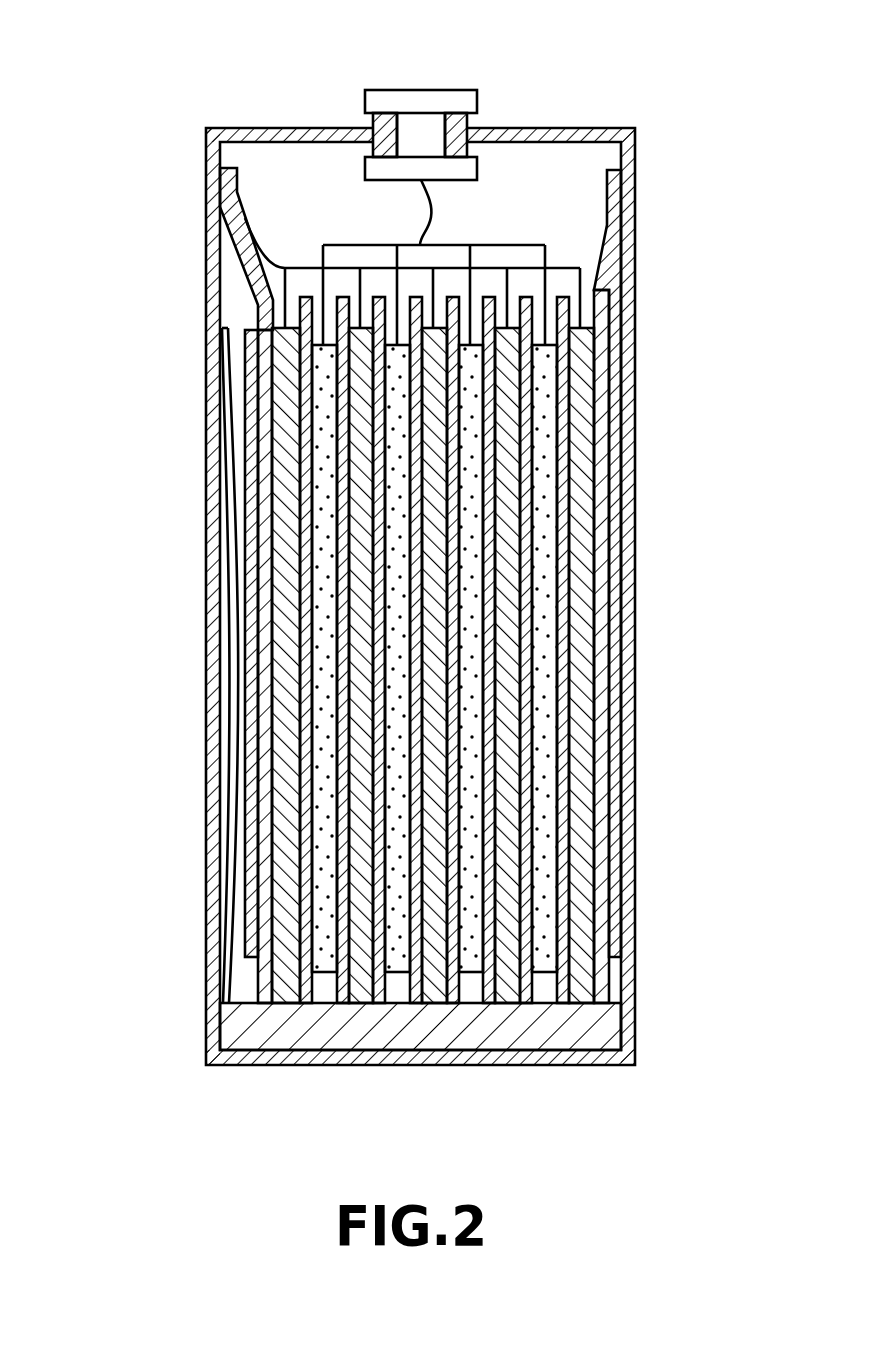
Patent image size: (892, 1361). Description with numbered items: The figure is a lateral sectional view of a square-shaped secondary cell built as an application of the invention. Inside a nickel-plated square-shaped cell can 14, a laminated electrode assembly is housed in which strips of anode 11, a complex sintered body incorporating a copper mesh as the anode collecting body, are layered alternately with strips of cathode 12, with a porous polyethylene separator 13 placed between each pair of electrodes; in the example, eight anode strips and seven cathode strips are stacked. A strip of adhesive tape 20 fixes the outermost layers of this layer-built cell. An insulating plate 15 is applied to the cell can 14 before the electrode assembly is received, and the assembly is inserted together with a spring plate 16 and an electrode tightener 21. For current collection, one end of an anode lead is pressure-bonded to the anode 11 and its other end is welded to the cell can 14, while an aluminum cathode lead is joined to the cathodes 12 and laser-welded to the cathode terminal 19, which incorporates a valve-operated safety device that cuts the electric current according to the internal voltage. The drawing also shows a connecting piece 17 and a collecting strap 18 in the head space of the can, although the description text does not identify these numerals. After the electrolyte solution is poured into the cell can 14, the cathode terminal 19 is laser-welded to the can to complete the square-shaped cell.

The anode 11 is at (590, 428).
The cathode 12 is at (550, 568).
The separator 13 is at (575, 513).
The cell can 14 is at (636, 760).
The insulating plate 15 is at (397, 1040).
The spring plate 16 is at (623, 638).
The connecting piece 17 is at (238, 192).
The current collecting strap 18 is at (503, 243).
The cathode terminal 19 is at (427, 88).
The adhesive tape 20 is at (622, 700).
The electrode tightener 21 is at (228, 443).